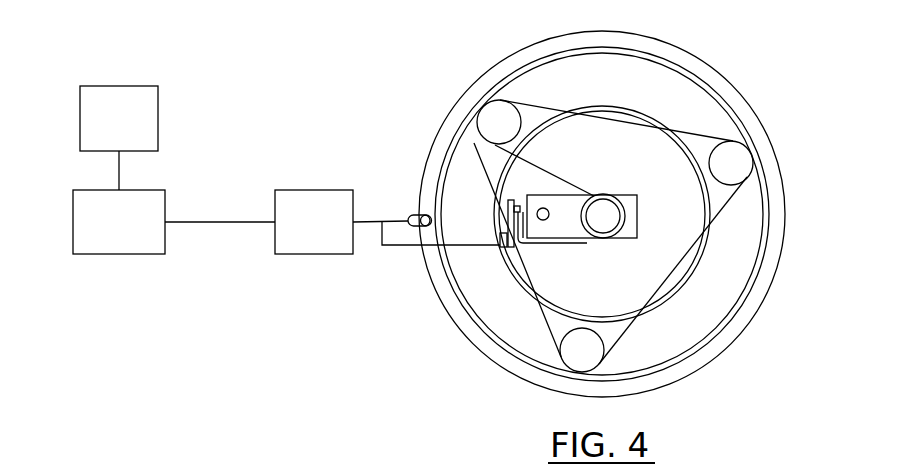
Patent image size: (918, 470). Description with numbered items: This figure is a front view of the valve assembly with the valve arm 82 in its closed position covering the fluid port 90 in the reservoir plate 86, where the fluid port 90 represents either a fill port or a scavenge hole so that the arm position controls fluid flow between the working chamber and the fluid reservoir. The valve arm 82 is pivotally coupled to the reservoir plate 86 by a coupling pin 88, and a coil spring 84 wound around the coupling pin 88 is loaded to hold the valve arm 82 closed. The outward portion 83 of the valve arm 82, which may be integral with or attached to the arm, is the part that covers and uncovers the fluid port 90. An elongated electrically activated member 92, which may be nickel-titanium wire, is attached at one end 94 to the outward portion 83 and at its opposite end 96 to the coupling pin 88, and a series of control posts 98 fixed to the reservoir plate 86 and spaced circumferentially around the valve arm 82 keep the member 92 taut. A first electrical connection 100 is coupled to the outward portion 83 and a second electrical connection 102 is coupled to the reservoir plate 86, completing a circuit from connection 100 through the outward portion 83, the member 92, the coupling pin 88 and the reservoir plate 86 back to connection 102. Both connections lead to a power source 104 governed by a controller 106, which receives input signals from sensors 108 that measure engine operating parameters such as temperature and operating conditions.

The valve arm 82 is at (560, 205).
The outward portion 83 is at (510, 213).
The coil spring 84 is at (590, 241).
The reservoir plate 86 is at (687, 97).
The coupling pin 88 is at (604, 217).
The fluid port 90 is at (541, 207).
The elongated electrically activated member 92 is at (555, 108).
The one end 94 is at (520, 255).
The opposite end 96 is at (584, 197).
The control posts 98 is at (498, 121).
The first electrical connection 100 is at (503, 247).
The second electrical connection 102 is at (407, 216).
The power source 104 is at (305, 190).
The controller 106 is at (148, 196).
The sensors 108 is at (158, 97).